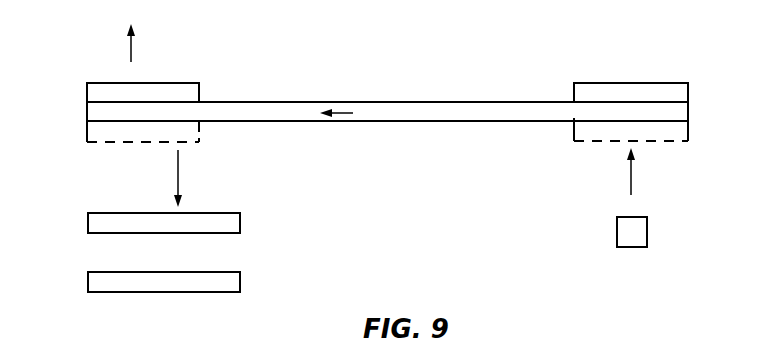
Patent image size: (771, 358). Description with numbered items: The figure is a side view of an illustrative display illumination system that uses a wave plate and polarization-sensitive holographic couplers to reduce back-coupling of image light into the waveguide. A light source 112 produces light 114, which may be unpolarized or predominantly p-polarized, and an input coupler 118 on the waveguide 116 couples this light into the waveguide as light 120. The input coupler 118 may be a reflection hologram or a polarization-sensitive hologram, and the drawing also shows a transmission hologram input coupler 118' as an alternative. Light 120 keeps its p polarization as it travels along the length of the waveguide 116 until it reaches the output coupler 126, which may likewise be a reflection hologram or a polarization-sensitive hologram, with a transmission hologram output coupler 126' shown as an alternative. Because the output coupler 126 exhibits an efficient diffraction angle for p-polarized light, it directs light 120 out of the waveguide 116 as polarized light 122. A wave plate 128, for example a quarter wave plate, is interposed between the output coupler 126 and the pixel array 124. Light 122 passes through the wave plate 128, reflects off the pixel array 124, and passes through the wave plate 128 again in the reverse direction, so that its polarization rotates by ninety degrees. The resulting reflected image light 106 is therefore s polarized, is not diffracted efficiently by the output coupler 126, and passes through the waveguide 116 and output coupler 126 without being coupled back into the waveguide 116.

The reflected image light 106 is at (131, 51).
The light source 112 is at (647, 235).
The light 114 is at (631, 168).
The waveguide 116 is at (688, 110).
The input coupler 118 is at (631, 62).
The transmission hologram input coupler 118' is at (594, 135).
The light 120 is at (343, 113).
The light 122 is at (178, 160).
The pixel array 124 is at (240, 282).
The output coupler 126 is at (106, 88).
The transmission hologram output coupler 126' is at (106, 127).
The wave plate 128 is at (240, 224).